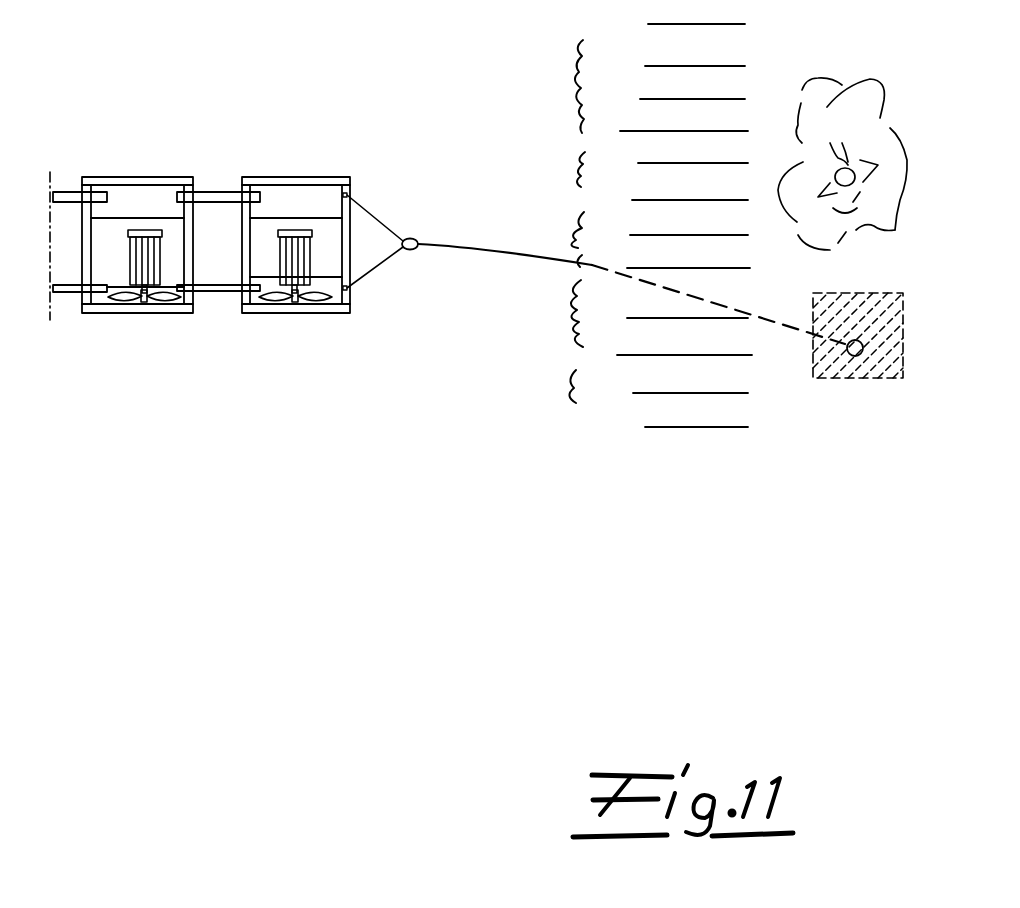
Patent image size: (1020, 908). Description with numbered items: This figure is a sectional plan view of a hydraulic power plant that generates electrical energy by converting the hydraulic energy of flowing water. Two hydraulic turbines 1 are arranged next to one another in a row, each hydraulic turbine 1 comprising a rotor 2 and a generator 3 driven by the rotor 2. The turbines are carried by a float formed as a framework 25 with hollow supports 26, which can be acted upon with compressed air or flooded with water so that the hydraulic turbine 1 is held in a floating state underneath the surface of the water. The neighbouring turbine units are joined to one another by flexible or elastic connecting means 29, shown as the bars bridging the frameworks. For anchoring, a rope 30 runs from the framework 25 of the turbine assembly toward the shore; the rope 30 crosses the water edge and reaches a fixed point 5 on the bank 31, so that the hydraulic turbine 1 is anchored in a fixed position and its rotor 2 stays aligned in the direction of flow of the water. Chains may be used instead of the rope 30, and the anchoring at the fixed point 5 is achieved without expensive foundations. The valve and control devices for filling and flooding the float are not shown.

The hydraulic turbine 1 is at (240, 220).
The rotor 2 is at (277, 296).
The generator 3 is at (282, 240).
The fixed point 5 is at (860, 362).
The framework 25 is at (122, 313).
The hollow support 26 is at (347, 293).
The connecting means 29 is at (67, 193).
The rope 30 is at (467, 268).
The bank 31 is at (695, 359).